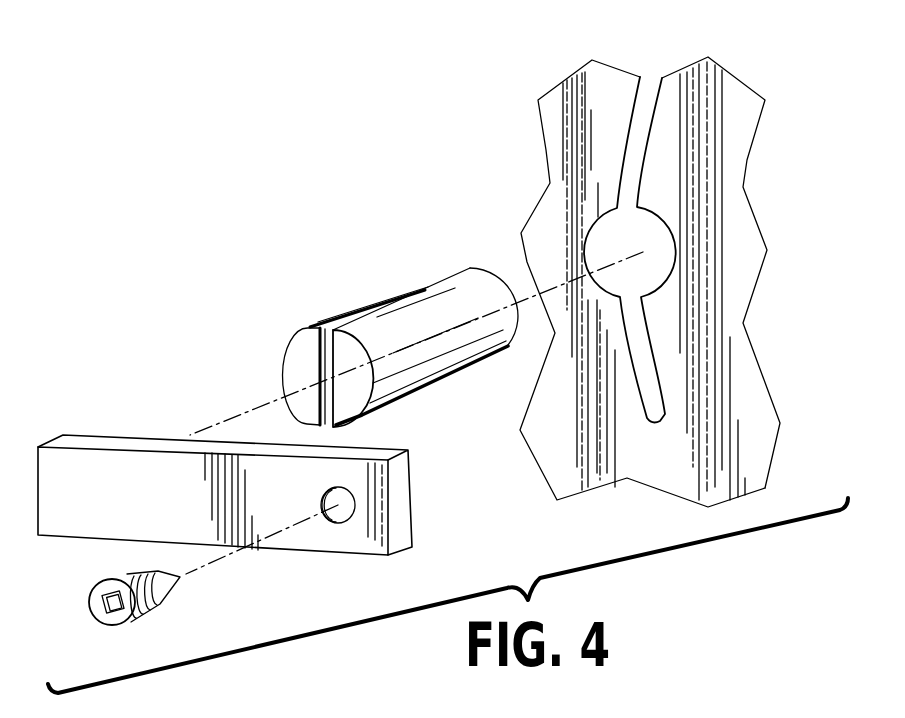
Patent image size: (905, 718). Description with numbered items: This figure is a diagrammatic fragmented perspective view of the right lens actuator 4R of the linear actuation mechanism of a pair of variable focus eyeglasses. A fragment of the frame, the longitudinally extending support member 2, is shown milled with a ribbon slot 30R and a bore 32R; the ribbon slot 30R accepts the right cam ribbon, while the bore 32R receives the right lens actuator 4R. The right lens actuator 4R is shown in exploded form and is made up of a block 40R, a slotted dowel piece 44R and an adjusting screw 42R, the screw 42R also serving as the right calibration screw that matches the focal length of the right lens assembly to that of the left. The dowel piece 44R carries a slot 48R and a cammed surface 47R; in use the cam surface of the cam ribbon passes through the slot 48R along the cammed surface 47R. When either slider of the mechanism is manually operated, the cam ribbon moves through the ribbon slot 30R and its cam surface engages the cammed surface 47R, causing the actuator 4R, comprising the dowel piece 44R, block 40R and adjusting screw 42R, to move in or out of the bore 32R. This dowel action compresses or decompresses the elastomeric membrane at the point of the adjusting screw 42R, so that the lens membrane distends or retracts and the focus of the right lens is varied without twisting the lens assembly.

The longitudinally extending support member 2 is at (555, 112).
The ribbon slot 30R is at (625, 115).
The bore 32R is at (662, 78).
The right lens actuator 4R is at (120, 262).
The block 40R is at (142, 495).
The right calibration screw 42R is at (92, 590).
The slotted dowel piece 44R is at (436, 388).
The cammed surface 47R is at (430, 283).
The slot 48R is at (316, 355).